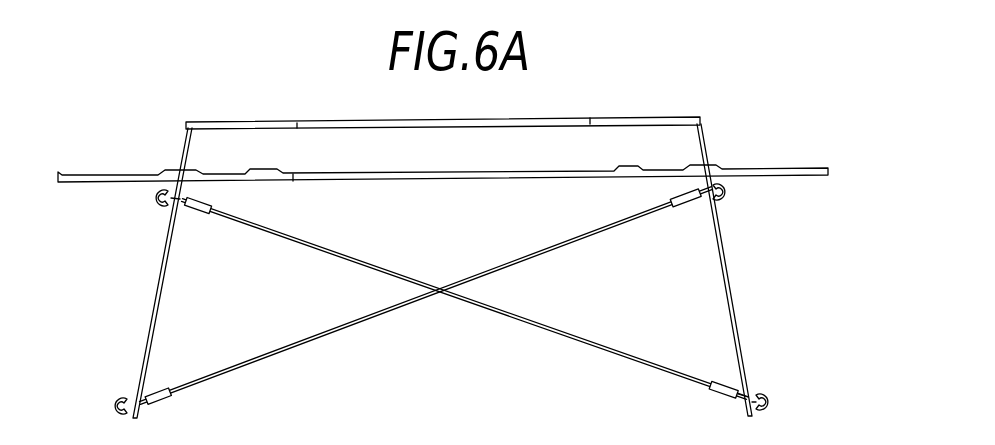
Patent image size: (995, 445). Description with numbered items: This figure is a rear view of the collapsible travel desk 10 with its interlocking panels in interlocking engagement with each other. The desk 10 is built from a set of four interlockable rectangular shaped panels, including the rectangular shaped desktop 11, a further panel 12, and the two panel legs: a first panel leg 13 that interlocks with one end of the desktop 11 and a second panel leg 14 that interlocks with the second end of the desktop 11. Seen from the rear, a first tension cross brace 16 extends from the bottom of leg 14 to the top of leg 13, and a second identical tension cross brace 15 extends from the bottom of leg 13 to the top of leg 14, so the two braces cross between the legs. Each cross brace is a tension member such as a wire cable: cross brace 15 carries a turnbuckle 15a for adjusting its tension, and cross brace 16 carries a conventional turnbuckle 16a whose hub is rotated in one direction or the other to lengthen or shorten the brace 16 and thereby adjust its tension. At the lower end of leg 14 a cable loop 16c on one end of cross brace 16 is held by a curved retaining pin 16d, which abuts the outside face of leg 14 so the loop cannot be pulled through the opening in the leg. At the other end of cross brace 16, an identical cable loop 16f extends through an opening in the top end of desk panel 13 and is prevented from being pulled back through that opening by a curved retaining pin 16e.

The collapsible travel desk 10 is at (625, 102).
The desktop 11 is at (359, 118).
The interlockable rectangular shaped panel 12 is at (328, 172).
The first panel leg 13 is at (163, 251).
The second panel leg 14 is at (725, 248).
The first cross brace 15 is at (327, 340).
The turnbuckle 15a is at (156, 402).
The second cross brace 16 is at (567, 340).
The turnbuckle 16a is at (716, 392).
The cable loop 16c is at (752, 386).
The curved retaining pin 16d is at (768, 396).
The curved retaining pin 16e is at (152, 203).
The cable loop 16f is at (181, 208).